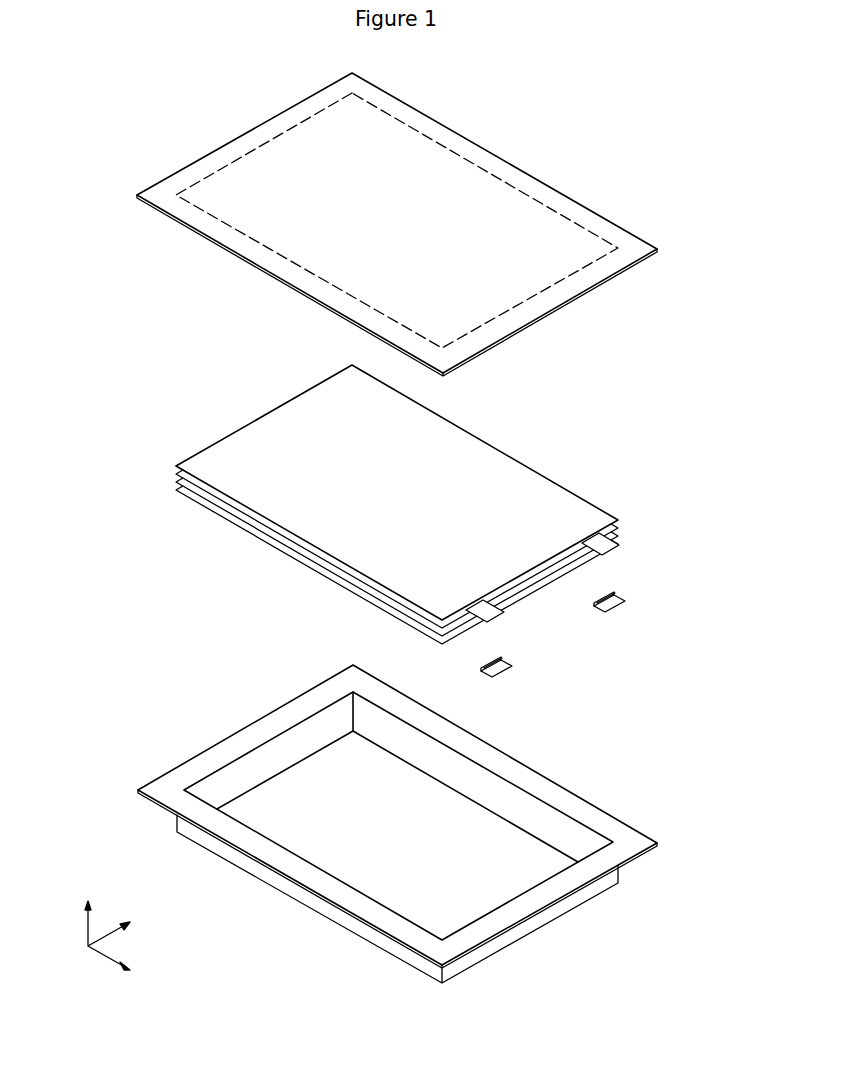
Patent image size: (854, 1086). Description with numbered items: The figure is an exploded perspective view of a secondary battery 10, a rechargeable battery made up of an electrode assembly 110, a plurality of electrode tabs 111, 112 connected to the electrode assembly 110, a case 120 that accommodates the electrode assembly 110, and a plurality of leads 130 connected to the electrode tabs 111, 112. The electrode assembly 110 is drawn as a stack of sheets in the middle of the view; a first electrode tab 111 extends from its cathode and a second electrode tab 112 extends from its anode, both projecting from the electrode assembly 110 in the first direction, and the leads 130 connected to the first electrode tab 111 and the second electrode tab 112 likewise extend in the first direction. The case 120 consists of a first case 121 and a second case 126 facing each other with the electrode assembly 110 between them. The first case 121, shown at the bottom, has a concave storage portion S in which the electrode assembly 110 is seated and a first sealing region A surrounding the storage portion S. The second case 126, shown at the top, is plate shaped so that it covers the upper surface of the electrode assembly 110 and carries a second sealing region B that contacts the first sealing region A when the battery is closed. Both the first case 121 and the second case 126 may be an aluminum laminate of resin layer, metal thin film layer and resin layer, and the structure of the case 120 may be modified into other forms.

The secondary battery 10 is at (197, 392).
The electrode assembly 110 is at (230, 497).
The first electrode tab 111 is at (497, 615).
The second electrode tab 112 is at (613, 549).
The case 120 is at (672, 318).
The first case 121 is at (610, 813).
The second case 126 is at (577, 302).
The leads 130 is at (614, 610).
The first sealing region A is at (162, 790).
The second sealing region B is at (198, 230).
The storage portion S is at (270, 810).